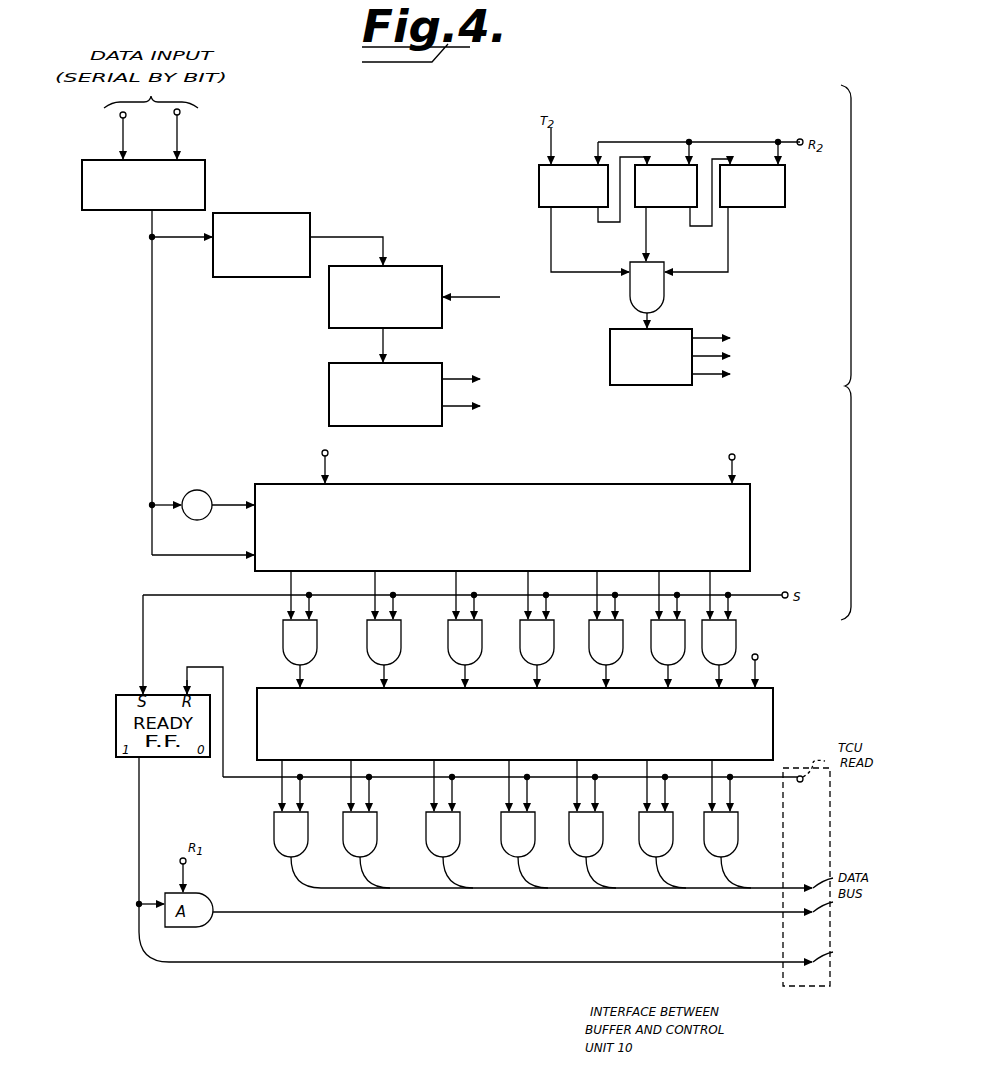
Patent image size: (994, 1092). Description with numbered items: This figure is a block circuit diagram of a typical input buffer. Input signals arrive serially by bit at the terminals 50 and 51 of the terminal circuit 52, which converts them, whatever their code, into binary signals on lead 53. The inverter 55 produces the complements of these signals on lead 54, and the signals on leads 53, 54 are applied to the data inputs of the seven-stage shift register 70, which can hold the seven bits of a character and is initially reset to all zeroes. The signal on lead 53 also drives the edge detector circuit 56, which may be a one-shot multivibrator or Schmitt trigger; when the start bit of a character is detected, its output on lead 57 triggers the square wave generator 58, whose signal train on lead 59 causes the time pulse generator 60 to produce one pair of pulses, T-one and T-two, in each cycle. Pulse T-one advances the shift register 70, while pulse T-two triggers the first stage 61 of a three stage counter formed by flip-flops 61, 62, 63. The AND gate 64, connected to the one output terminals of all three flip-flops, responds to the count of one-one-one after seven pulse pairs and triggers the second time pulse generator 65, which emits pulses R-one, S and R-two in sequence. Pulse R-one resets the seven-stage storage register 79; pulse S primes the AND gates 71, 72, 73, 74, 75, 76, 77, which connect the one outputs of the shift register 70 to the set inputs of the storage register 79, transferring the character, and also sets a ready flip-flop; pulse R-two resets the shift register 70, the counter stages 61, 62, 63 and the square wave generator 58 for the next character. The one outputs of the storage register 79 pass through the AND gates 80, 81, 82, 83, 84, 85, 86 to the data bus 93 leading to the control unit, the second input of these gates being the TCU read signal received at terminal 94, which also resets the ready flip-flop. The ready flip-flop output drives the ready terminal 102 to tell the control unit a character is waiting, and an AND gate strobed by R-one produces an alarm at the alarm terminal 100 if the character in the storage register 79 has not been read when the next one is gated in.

The input terminal 50 is at (118, 116).
The input terminal 51 is at (181, 114).
The terminal circuit 52 is at (82, 200).
The lead 53 is at (150, 448).
The lead 54 is at (233, 508).
The inverter 55 is at (206, 492).
The edge detector circuit 56 is at (268, 213).
The lead 57 is at (344, 237).
The square wave generator 58 is at (329, 303).
The lead 59 is at (381, 342).
The time pulse generator 60 is at (329, 393).
The first stage of the three stage counter 61 is at (570, 209).
The second stage of the three stage counter 62 is at (654, 209).
The third stage of the three stage counter 63 is at (768, 208).
The AND gate 64 is at (630, 292).
The second time pulse generator 65 is at (682, 329).
The 7-stage shift register 70 is at (471, 484).
The AND gate 71 is at (285, 643).
The AND gate 72 is at (401, 652).
The AND gate 73 is at (482, 652).
The AND gate 74 is at (554, 652).
The AND gate 75 is at (623, 652).
The AND gate 76 is at (685, 652).
The AND gate 77 is at (738, 632).
The 7-stage storage register 79 is at (775, 708).
The AND gate 80 is at (274, 850).
The AND gate 81 is at (345, 852).
The AND gate 82 is at (428, 852).
The AND gate 83 is at (503, 852).
The AND gate 84 is at (571, 852).
The AND gate 85 is at (641, 852).
The AND gate 86 is at (706, 852).
The data bus 93 is at (828, 796).
The terminal 94 is at (795, 783).
The alarm terminal 100 is at (760, 913).
The ready terminal 102 is at (760, 963).